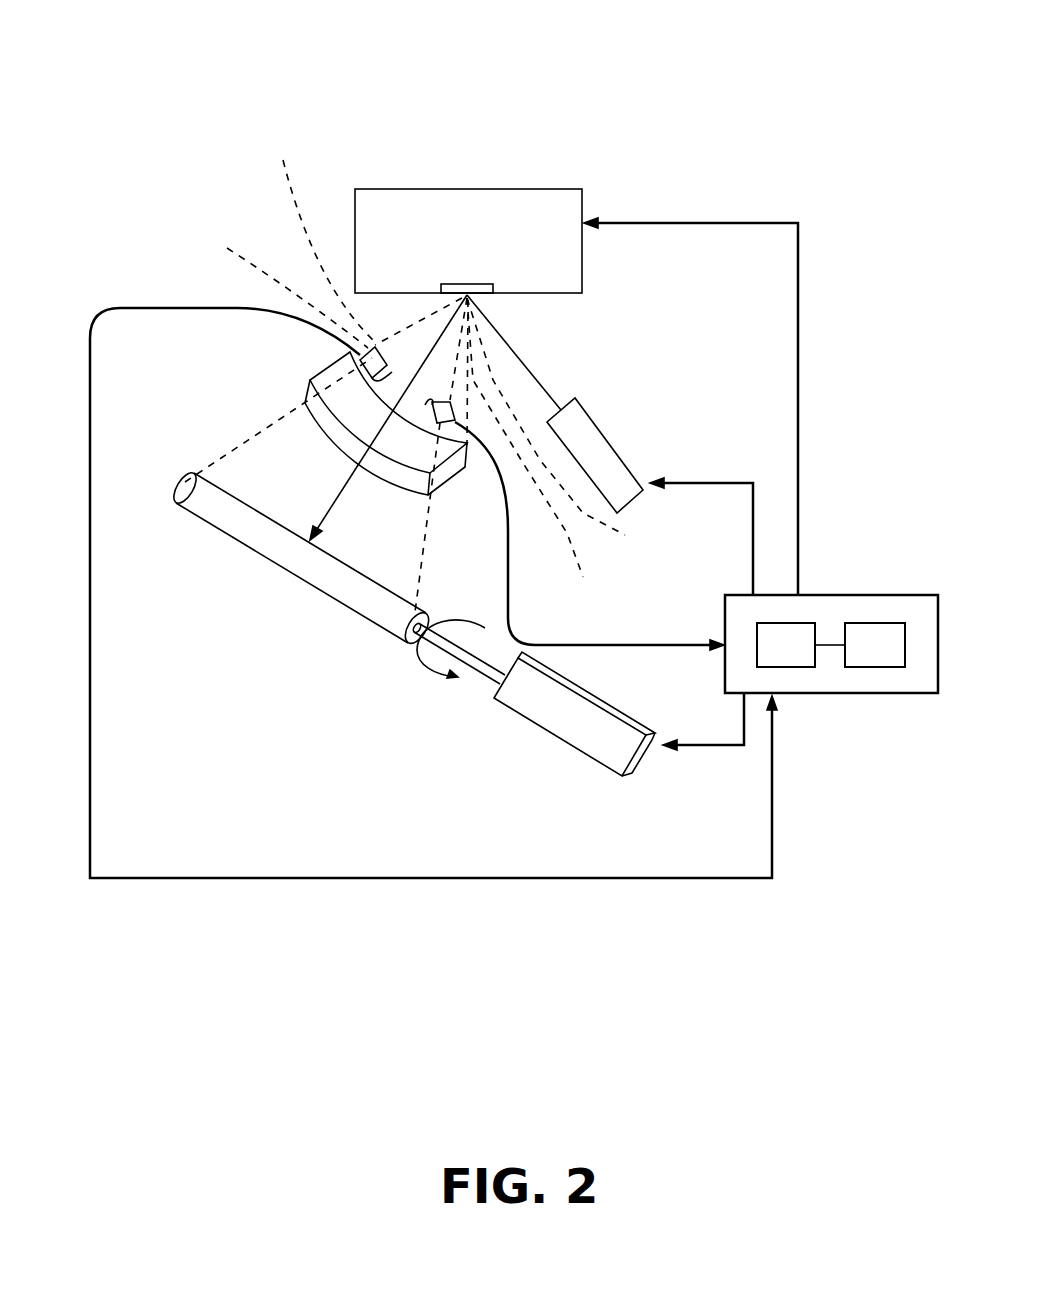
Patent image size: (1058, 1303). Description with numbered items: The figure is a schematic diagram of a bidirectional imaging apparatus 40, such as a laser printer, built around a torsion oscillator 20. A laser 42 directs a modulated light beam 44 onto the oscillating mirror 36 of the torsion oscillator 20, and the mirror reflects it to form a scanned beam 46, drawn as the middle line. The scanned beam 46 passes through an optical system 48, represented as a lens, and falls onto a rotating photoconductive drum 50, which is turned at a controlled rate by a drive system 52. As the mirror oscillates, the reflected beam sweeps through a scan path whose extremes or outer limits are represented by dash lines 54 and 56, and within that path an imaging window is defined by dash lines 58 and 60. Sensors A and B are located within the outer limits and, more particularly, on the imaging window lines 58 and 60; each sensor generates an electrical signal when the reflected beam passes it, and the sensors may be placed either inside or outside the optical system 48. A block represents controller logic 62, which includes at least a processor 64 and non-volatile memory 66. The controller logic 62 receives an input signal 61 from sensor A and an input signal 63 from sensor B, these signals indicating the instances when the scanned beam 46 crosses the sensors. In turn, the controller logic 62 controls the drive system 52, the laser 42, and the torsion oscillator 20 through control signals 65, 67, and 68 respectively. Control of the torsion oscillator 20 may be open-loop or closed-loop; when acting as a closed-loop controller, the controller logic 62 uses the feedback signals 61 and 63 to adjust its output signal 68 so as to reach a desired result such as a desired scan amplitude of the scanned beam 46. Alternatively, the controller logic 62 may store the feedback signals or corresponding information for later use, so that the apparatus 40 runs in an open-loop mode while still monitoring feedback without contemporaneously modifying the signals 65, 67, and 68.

The torsion oscillator 20 is at (408, 189).
The oscillating mirror 36 is at (490, 298).
The bidirectional imaging apparatus 40 is at (797, 115).
The laser 42 is at (617, 453).
The modulated light beam 44 is at (530, 373).
The scanned beam 46 is at (340, 494).
The optical system 48 is at (348, 355).
The rotating photoconductive drum 50 is at (272, 562).
The drive system 52 is at (556, 738).
The dash line 54 is at (567, 428).
The dash line 56 is at (322, 232).
The imaging window dash line 58 is at (536, 459).
The imaging window dash line 60 is at (279, 289).
The input signal 61 is at (660, 645).
The controller logic 62 is at (831, 599).
The input signal 63 is at (297, 877).
The processor 64 is at (786, 645).
The control signal 65 is at (740, 752).
The non-volatile memory 66 is at (875, 645).
The control signal 67 is at (717, 483).
The control signal 68 is at (753, 222).